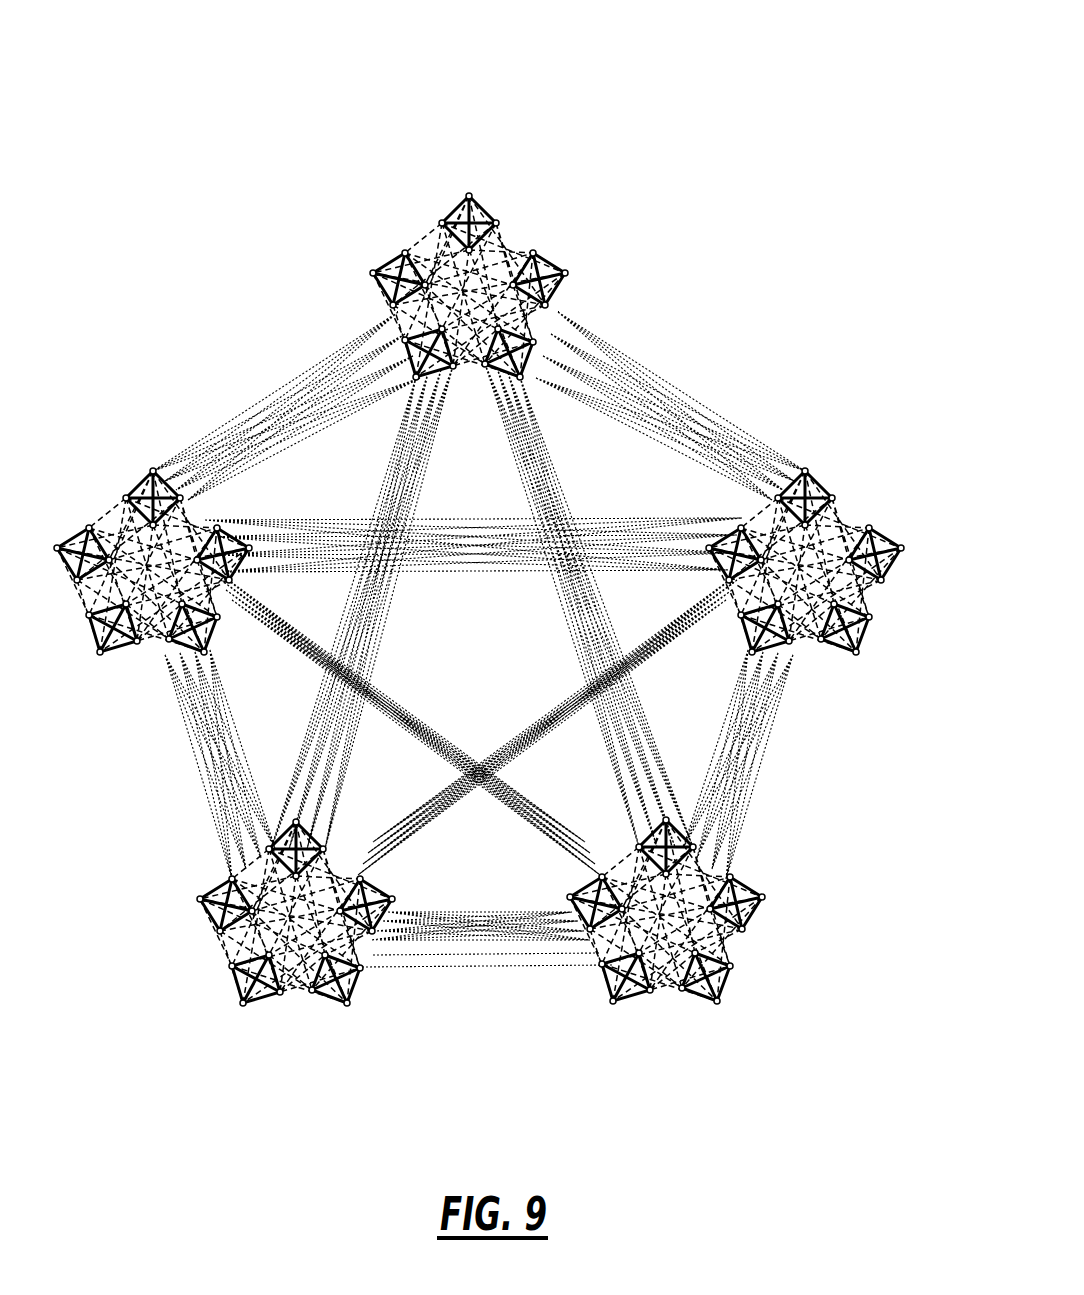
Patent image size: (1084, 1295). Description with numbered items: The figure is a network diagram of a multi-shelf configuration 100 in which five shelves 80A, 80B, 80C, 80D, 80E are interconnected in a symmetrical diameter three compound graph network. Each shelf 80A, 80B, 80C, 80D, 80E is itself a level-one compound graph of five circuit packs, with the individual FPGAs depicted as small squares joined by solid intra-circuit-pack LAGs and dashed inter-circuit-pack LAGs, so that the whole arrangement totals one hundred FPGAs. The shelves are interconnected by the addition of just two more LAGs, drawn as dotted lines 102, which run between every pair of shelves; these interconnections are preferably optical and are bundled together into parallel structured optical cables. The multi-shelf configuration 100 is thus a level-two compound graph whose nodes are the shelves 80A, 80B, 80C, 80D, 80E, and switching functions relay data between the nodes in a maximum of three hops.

The multi-shelf configuration 100 is at (730, 68).
The dotted lines 102 is at (677, 383).
The shelf 80A is at (528, 213).
The shelf 80B is at (877, 488).
The shelf 80C is at (750, 973).
The shelf 80D is at (355, 1025).
The shelf 80E is at (124, 683).